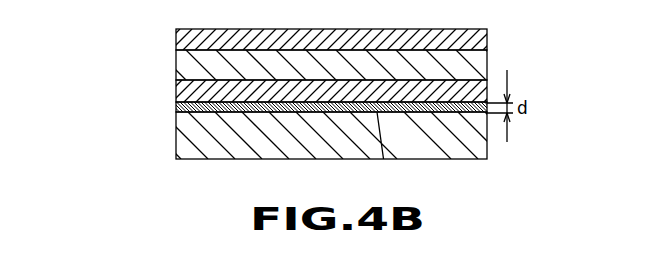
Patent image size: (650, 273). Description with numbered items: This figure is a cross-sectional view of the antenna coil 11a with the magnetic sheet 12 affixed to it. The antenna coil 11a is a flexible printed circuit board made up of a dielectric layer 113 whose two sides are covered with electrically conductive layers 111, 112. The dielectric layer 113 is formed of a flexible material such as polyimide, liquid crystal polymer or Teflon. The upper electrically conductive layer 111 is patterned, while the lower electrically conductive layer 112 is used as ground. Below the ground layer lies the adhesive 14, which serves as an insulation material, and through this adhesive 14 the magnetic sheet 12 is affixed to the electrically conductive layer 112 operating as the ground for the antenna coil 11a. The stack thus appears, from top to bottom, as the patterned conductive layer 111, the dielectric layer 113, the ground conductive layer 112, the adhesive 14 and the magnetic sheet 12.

The antenna coil 11a is at (279, 35).
The electrically conductive layer 111 is at (179, 33).
The dielectric layer 113 is at (185, 62).
The electrically conductive layer 112 is at (178, 90).
The adhesive 14 is at (178, 107).
The magnetic sheet 12 is at (188, 142).